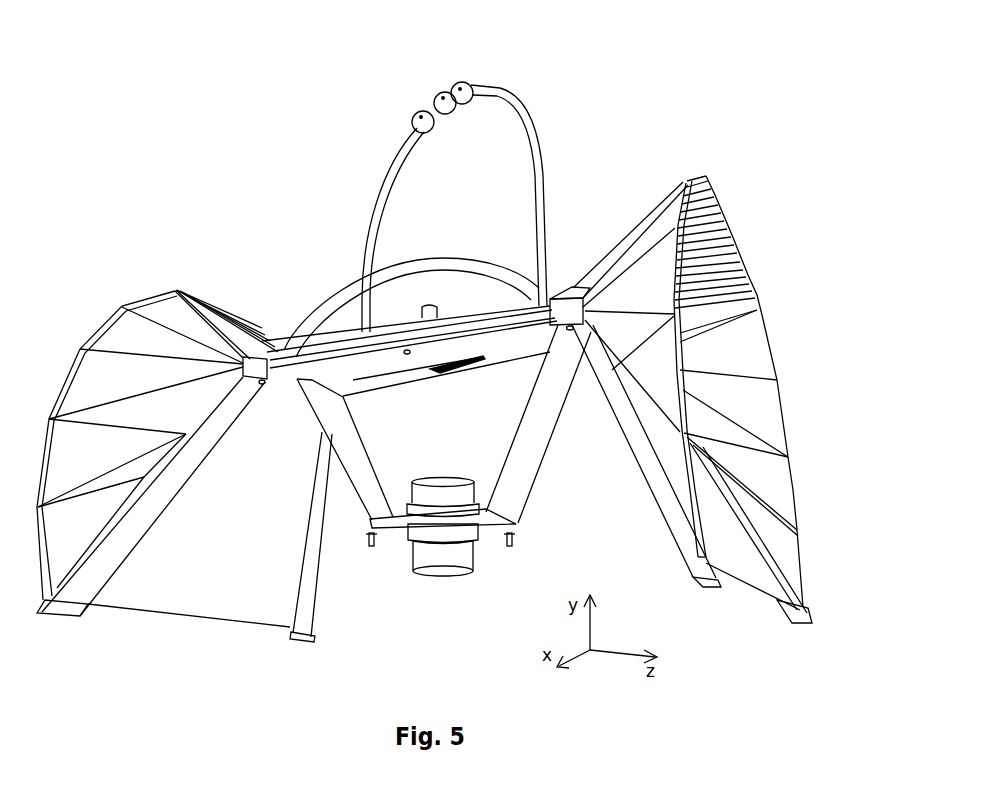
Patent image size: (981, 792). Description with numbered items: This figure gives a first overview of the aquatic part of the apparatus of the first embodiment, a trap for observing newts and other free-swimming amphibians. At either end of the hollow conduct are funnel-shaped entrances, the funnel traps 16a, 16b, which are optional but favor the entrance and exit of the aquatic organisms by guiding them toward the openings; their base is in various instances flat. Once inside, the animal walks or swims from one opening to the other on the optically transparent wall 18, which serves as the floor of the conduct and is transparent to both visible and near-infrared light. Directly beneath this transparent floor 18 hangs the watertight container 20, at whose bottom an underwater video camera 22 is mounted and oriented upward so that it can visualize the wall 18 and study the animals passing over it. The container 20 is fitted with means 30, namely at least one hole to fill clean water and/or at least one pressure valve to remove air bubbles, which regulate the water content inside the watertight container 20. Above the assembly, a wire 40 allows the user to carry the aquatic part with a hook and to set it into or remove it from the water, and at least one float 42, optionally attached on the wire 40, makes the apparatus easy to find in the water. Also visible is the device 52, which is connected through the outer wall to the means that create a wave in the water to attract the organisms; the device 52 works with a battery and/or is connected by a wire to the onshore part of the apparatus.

The funnel trap 16a is at (83, 387).
The funnel trap 16b is at (632, 293).
The optically transparent wall 18 is at (505, 358).
The watertight container 20 is at (525, 468).
The underwater video camera 22 is at (432, 560).
The means for regulating the water content 30 is at (512, 542).
The wire 40 is at (315, 328).
The float 42 is at (470, 86).
The device 52 is at (420, 312).